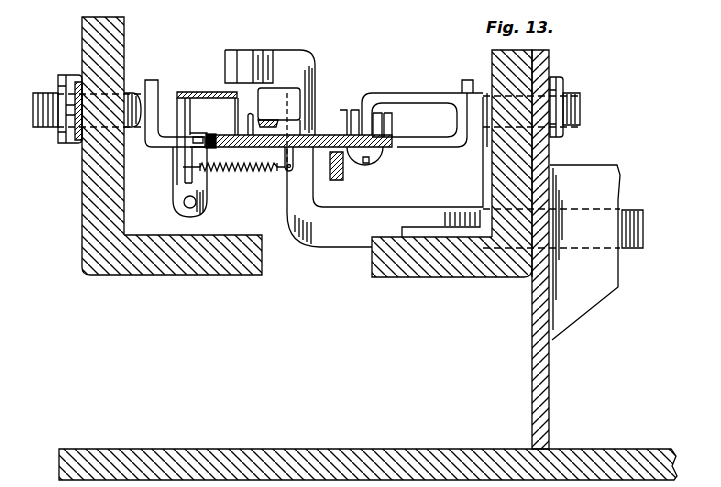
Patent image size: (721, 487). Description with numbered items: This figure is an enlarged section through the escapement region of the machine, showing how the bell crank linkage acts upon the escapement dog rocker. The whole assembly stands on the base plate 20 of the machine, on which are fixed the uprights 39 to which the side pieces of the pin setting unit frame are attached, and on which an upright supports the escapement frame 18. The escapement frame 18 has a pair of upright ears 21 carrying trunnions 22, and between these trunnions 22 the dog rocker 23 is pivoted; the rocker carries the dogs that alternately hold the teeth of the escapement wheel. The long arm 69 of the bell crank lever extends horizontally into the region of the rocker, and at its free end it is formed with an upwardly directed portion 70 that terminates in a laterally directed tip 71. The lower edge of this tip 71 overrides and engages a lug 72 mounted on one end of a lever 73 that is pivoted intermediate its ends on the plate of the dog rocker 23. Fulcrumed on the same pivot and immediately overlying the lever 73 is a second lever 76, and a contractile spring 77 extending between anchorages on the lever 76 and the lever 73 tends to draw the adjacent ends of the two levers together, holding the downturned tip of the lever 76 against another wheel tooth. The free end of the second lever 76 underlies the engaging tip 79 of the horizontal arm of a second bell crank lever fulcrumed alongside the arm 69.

The escapement frame 18 is at (168, 263).
The base plate 20 is at (622, 454).
The upright ears 21 is at (99, 32).
The trunnions 22 is at (134, 110).
The dog rocker 23 is at (232, 136).
The uprights 39 is at (547, 372).
The long arm of bell crank lever 69 is at (346, 238).
The upwardly directed portion 70 is at (315, 63).
The laterally directed tip 71 is at (263, 63).
The lug 72 is at (292, 100).
The lever 73 is at (283, 172).
The second lever 76 is at (197, 91).
The contractile spring 77 is at (241, 173).
The engaging tip 79 is at (240, 52).